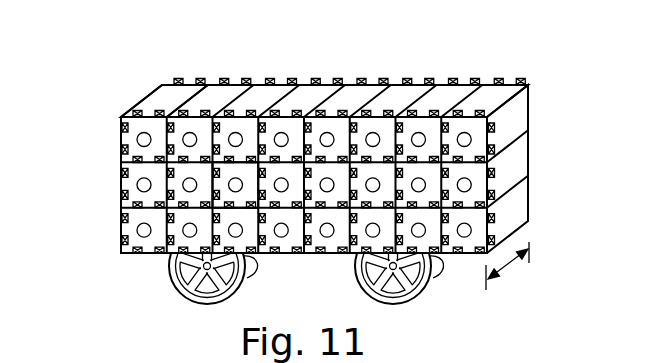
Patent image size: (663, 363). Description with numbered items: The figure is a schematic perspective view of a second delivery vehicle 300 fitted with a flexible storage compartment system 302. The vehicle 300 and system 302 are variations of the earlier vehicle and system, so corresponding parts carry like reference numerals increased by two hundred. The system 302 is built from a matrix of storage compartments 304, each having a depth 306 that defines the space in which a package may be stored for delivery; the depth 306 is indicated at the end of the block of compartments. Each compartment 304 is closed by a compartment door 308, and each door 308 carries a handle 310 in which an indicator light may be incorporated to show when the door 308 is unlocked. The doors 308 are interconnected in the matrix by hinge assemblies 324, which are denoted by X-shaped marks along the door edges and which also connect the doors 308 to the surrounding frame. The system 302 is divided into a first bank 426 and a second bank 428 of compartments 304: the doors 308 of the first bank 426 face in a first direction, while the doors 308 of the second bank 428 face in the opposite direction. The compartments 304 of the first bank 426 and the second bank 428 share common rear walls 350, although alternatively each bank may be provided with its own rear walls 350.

The second delivery vehicle 300 is at (318, 158).
The flexible storage compartment system 302 is at (502, 94).
The storage compartments 304 is at (147, 107).
The depth 306 is at (507, 268).
The compartment doors 308 is at (237, 173).
The handle 310 is at (138, 186).
The hinge assemblies 324 is at (177, 231).
The rear walls 350 is at (387, 102).
The first bank 426 is at (119, 244).
The second bank 428 is at (467, 75).